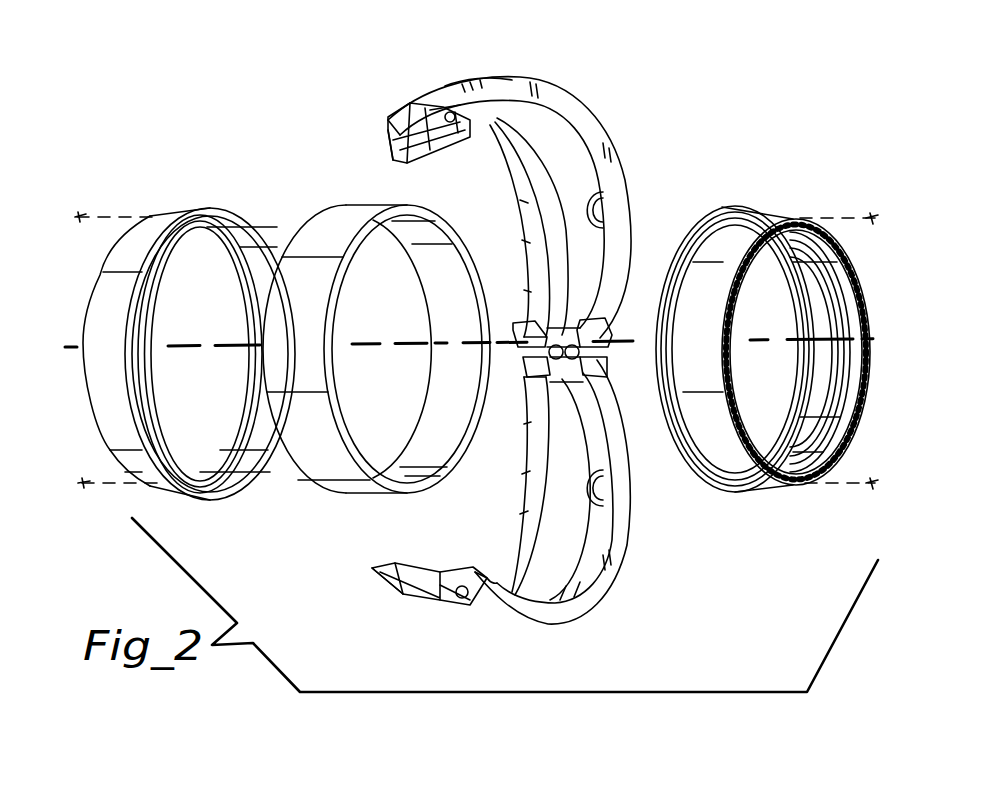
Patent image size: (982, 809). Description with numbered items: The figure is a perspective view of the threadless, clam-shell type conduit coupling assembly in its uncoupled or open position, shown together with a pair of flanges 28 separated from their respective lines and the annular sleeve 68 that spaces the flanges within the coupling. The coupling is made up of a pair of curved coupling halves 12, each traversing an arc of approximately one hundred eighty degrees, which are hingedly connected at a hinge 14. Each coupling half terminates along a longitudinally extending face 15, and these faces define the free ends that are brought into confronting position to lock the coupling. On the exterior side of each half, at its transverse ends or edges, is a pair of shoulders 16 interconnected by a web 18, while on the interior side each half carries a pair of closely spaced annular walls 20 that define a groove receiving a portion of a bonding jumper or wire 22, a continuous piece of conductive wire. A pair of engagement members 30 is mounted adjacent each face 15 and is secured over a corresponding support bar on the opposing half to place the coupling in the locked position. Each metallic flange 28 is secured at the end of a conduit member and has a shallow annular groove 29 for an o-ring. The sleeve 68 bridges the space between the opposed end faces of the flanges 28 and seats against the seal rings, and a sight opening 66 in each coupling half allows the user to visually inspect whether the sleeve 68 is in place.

The coupling halves 12 is at (523, 341).
The hinge 14 is at (548, 360).
The longitudinally extending face 15 is at (448, 160).
The shoulders 16 is at (502, 85).
The web 18 is at (448, 96).
The annular walls 20 is at (490, 341).
The bonding jumper/wire 22 is at (538, 212).
The metallic flange 28 is at (145, 222).
The annular channel or groove 29 is at (190, 220).
The engagement members 30 is at (365, 140).
The sight opening 66 is at (592, 208).
The sleeve 68 is at (332, 230).